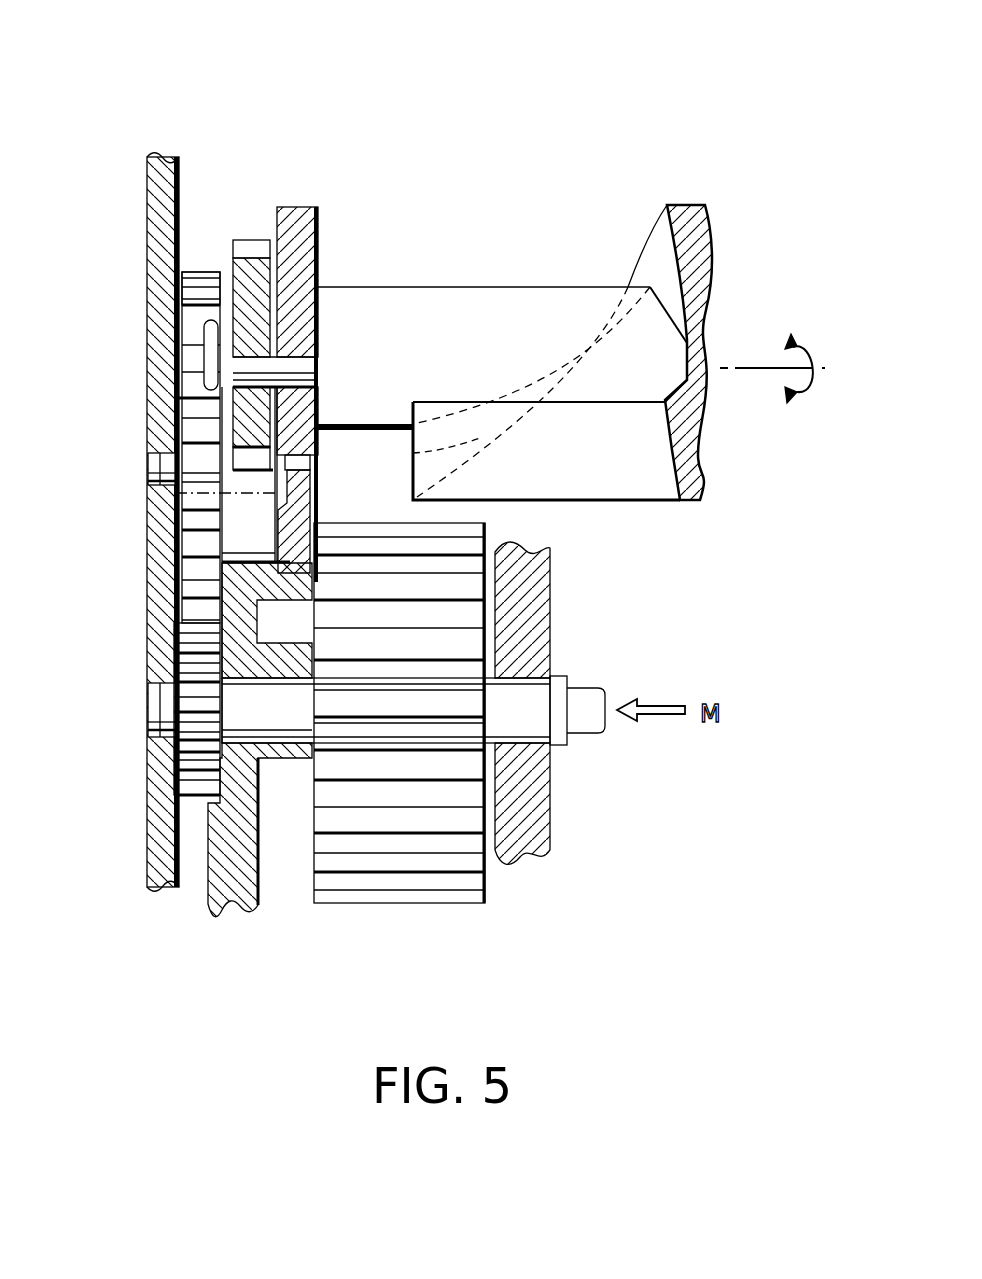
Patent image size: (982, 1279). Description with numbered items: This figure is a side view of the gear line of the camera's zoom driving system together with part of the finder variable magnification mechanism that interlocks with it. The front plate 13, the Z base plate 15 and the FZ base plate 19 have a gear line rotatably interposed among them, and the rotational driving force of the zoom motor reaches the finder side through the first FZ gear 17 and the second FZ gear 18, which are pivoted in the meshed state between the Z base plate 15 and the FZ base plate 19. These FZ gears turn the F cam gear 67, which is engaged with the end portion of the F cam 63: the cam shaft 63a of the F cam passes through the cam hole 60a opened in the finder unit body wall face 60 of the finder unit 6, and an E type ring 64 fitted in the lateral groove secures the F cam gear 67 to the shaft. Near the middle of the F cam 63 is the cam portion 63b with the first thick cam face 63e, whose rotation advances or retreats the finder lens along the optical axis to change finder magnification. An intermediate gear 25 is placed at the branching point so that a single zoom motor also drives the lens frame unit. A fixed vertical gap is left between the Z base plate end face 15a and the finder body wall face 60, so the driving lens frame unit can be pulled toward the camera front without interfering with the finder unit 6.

The finder unit 6 is at (578, 122).
The front plate 13 is at (527, 830).
The base plate (Z base plate) 15 is at (235, 905).
The Z base plate end face 15a is at (297, 448).
The first FZ gear 17 is at (192, 770).
The second FZ gear 18 is at (183, 515).
The finder zoom base plate (FZ base plate) 19 is at (147, 205).
The intermediate gear 25 is at (380, 903).
The finder unit body wall face 60 is at (302, 237).
The cam hole 60a is at (320, 458).
The finder cam (F cam) 63 is at (587, 248).
The cam shaft 63a is at (300, 345).
The cam portion 63b is at (615, 470).
The first thick cam face 63e is at (413, 455).
The E type ring 64 is at (207, 303).
The finder cam gear (F cam gear) 67 is at (252, 240).